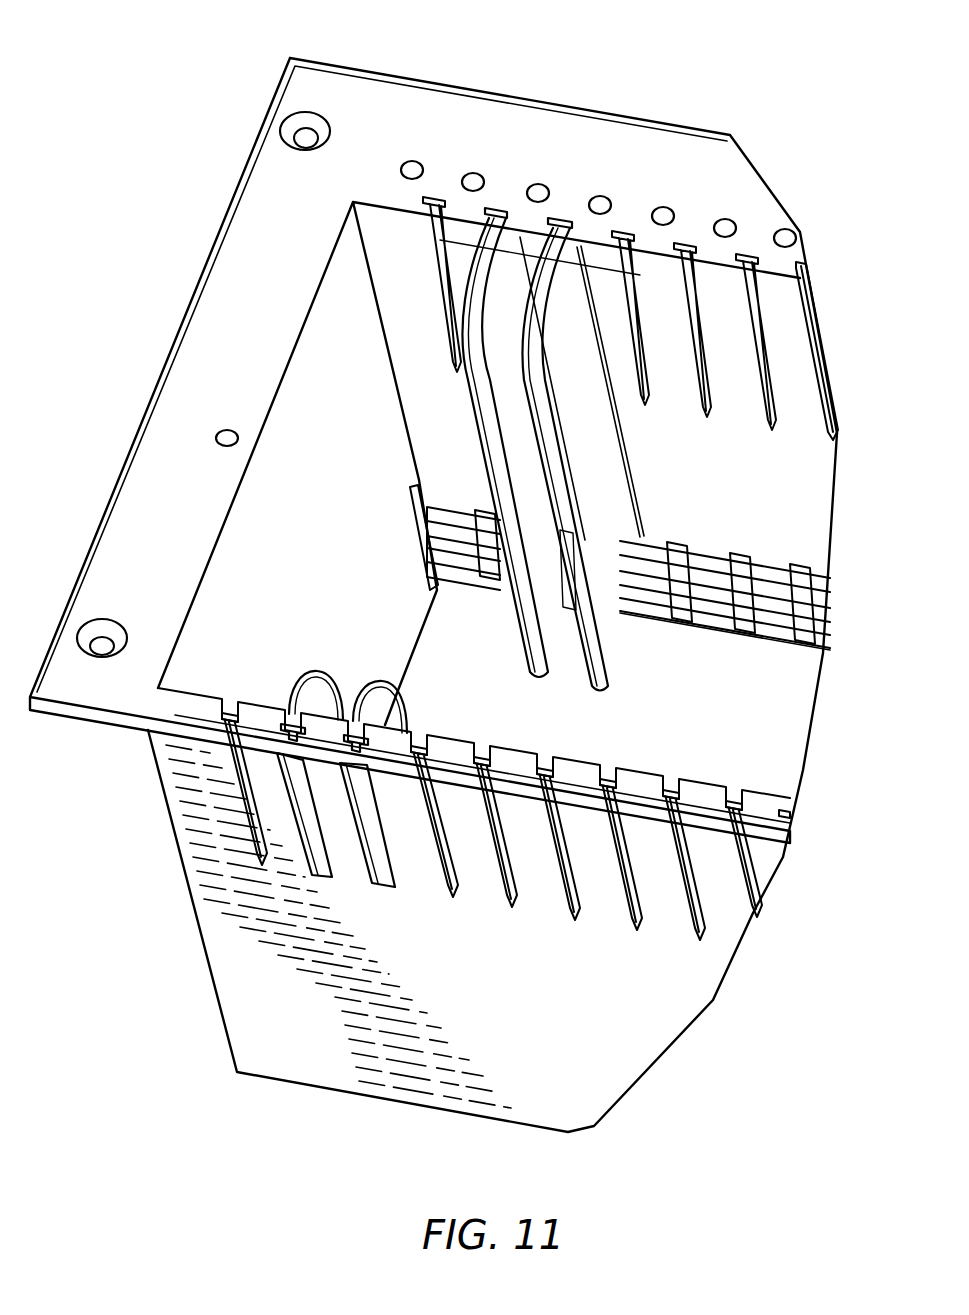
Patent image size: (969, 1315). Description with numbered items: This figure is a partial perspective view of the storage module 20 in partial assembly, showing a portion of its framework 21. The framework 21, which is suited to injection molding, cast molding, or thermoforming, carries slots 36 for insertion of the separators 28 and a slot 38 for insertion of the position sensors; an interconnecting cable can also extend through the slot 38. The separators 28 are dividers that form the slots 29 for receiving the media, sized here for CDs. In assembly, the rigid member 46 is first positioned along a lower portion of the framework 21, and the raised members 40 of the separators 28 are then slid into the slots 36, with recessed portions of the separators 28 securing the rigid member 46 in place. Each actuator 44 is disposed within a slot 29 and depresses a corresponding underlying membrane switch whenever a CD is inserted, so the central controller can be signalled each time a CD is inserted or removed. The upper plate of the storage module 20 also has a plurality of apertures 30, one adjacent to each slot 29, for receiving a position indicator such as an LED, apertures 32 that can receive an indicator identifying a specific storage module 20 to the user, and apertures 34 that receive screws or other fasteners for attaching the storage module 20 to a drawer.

The storage module 20 is at (395, 105).
The framework 21 is at (300, 1062).
The separators 28 is at (580, 427).
The slots 29 is at (506, 401).
The apertures 30 is at (476, 180).
The apertures 32 is at (218, 432).
The apertures 34 is at (315, 110).
The slots 36 is at (708, 416).
The slot 38 is at (412, 490).
The raised members 40 is at (305, 880).
The actuator 44 is at (647, 555).
The rigid member 46 is at (685, 625).